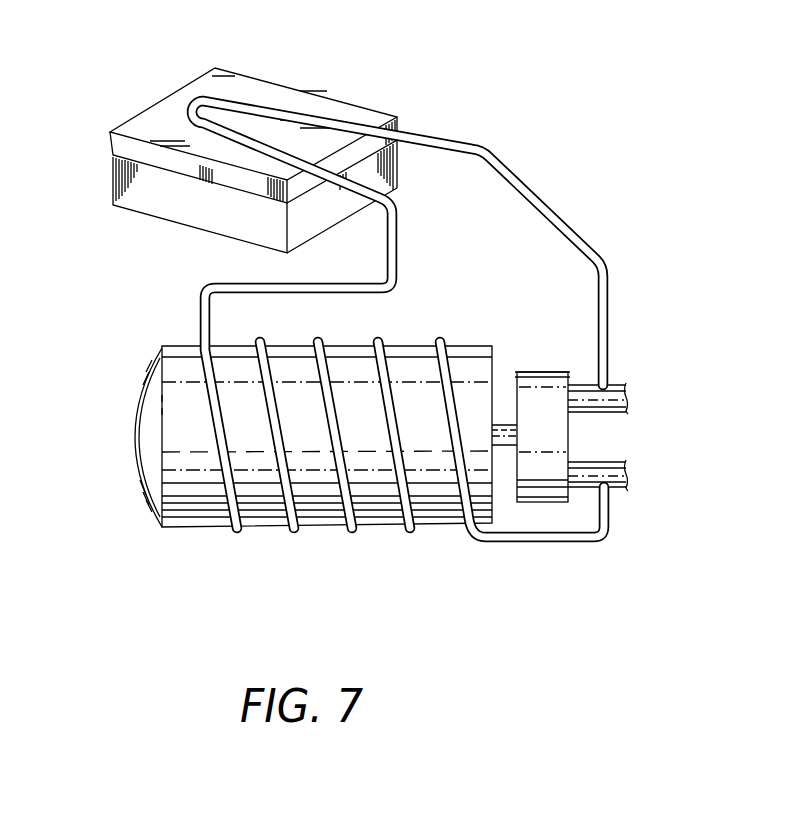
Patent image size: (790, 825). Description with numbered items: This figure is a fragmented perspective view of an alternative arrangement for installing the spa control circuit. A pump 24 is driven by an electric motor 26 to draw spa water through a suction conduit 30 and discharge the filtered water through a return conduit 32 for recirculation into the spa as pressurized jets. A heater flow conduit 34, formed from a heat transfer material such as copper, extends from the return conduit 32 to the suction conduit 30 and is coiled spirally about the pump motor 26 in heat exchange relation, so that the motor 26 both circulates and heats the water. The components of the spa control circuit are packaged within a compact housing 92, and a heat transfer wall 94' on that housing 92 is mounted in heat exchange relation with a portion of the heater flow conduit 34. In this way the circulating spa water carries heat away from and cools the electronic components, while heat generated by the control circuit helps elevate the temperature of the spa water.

The pump 24 is at (532, 375).
The electric motor 26 is at (153, 492).
The suction conduit 30 is at (620, 485).
The return conduit 32 is at (617, 383).
The heater flow conduit 34 is at (527, 187).
The housing 92 is at (253, 153).
The heat transfer wall 94' is at (253, 124).